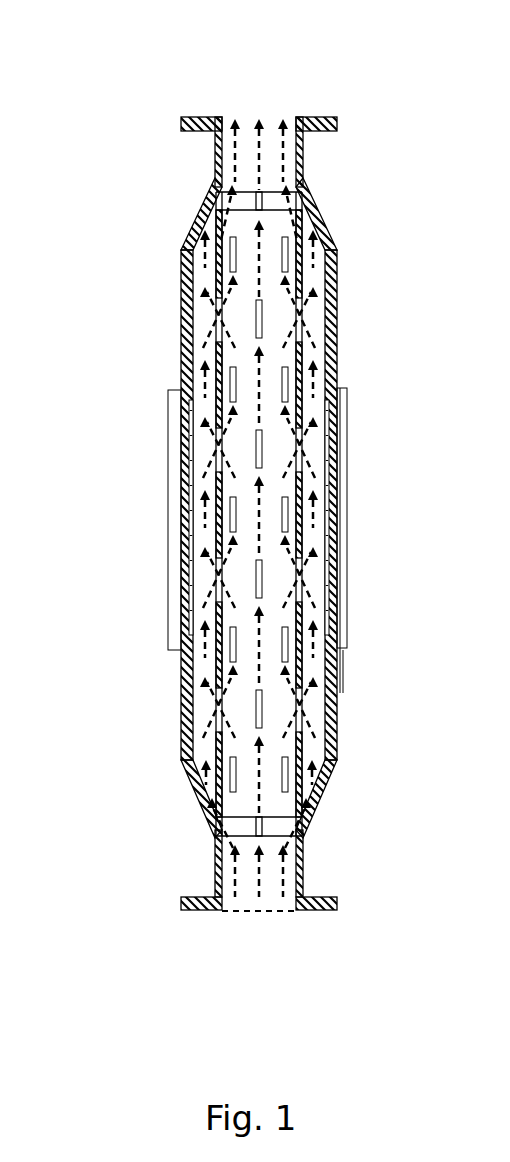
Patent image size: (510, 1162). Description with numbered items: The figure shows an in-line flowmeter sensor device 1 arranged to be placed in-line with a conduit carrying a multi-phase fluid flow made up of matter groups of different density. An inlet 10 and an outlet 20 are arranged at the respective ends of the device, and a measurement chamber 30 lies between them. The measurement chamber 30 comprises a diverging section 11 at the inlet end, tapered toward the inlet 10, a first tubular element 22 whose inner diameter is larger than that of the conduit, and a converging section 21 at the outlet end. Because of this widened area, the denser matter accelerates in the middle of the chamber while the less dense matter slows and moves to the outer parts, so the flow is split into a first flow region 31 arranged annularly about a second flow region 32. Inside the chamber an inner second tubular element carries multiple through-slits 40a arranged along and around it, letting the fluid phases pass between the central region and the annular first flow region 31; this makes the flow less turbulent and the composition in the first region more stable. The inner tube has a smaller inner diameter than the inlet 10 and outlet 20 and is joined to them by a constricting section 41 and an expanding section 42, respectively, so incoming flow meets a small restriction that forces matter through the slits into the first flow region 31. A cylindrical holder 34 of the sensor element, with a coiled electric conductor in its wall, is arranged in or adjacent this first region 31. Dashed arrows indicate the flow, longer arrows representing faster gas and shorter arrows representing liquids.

The in-line flowmeter sensor device 1 is at (89, 112).
The inlet 10 is at (281, 913).
The diverging section 11 is at (196, 782).
The outlet 20 is at (283, 117).
The converging section 21 is at (191, 222).
The first tubular element 22 is at (183, 352).
The measurement chamber 30 is at (143, 505).
The first flow region 31 is at (338, 316).
The second flow region 32 is at (336, 250).
The cylindrical holder 34 is at (338, 390).
The through-slits 40a is at (329, 470).
The constricting section 41 is at (217, 841).
The expanding section 42 is at (301, 208).